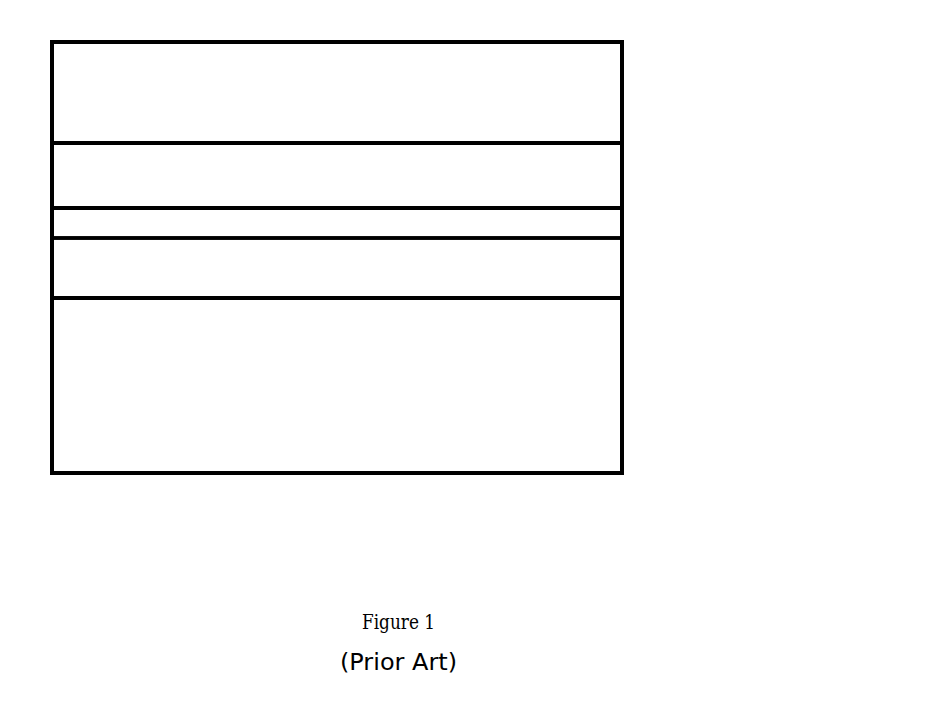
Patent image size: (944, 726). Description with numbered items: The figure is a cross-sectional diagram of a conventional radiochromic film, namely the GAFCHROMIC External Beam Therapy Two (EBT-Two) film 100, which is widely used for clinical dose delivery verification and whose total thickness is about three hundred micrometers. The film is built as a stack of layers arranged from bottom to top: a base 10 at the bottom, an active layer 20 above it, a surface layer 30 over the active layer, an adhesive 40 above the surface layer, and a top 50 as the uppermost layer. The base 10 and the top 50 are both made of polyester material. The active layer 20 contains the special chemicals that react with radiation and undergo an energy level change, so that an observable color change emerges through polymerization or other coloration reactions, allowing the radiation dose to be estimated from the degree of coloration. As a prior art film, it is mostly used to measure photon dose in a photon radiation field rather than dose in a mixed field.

The EBT2 film 100 is at (497, 542).
The base 10 is at (337, 385).
The active layer 20 is at (590, 278).
The surface layer 30 is at (593, 222).
The adhesive 40 is at (573, 173).
The top 50 is at (337, 92).